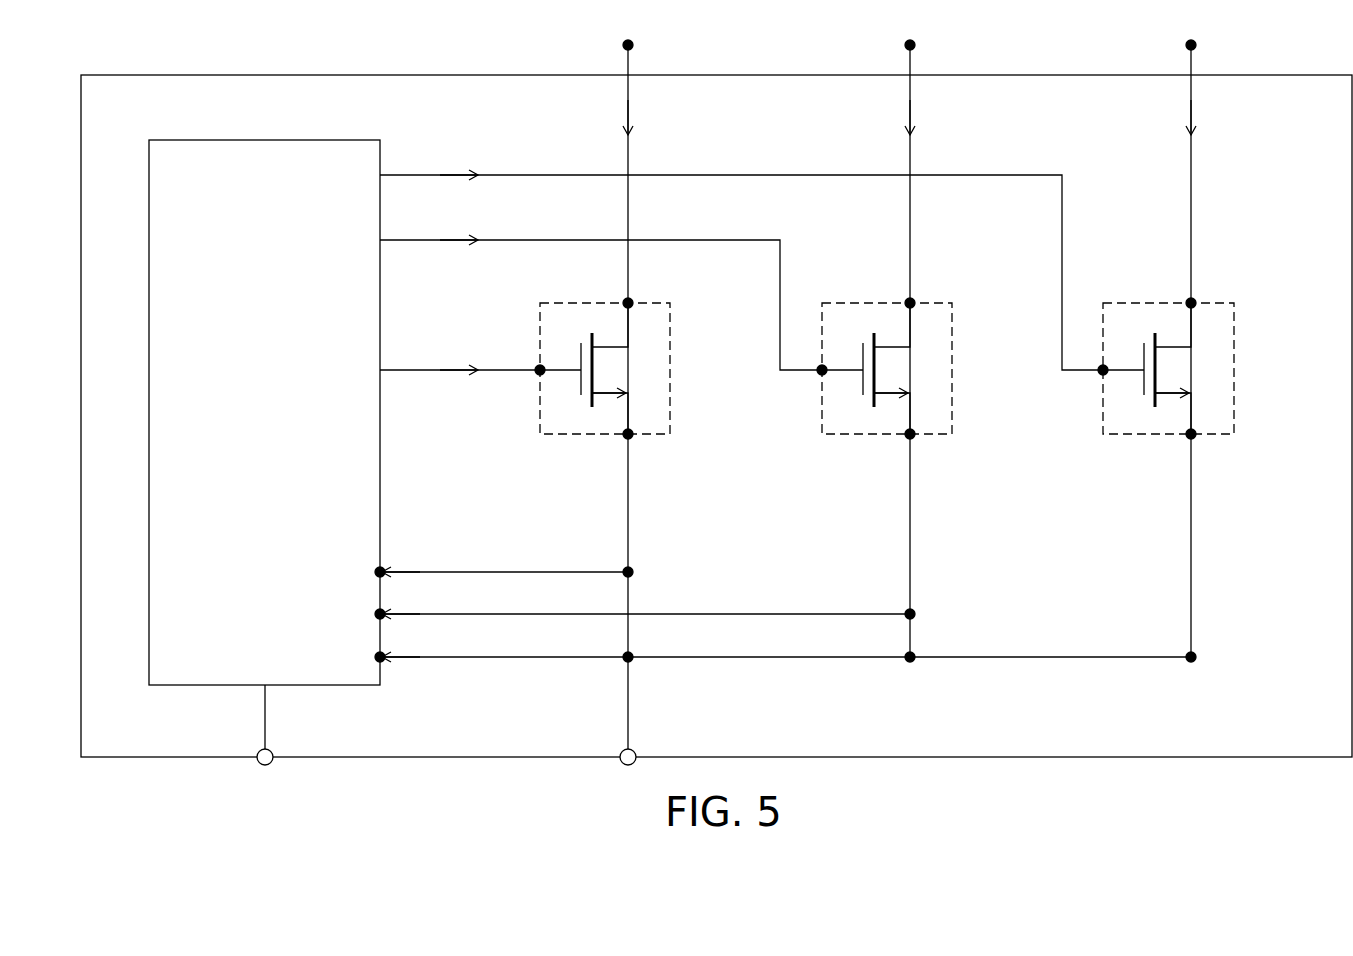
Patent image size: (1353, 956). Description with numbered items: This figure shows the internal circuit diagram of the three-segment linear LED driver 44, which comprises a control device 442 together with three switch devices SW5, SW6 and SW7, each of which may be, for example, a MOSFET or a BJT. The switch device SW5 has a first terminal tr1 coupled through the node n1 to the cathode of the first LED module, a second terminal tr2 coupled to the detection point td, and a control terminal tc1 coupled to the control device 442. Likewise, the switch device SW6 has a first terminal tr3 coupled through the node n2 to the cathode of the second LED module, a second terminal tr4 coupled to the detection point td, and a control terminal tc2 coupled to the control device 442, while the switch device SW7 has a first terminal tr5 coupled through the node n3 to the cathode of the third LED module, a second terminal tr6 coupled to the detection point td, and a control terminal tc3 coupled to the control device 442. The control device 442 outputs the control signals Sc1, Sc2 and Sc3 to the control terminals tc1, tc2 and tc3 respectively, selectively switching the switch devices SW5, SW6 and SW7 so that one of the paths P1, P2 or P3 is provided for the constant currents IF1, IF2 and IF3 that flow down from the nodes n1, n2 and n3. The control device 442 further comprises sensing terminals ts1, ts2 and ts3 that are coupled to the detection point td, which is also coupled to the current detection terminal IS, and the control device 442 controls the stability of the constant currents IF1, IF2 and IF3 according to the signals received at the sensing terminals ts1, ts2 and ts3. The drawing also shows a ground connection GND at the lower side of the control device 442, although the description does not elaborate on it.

The 3-segment linear LED driver 44 is at (1283, 75).
The control device 442 is at (158, 140).
The switch device SW5 is at (670, 340).
The switch device SW6 is at (952, 340).
The switch device SW7 is at (1234, 340).
The path P1 is at (632, 105).
The path P2 is at (914, 105).
The path P3 is at (1195, 105).
The node n1 is at (625, 375).
The node n2 is at (907, 329).
The node n3 is at (1188, 329).
The constant current IF1 is at (608, 155).
The constant current IF2 is at (890, 155).
The constant current IF3 is at (1171, 155).
The control signal Sc1 is at (408, 363).
The control signal Sc2 is at (408, 233).
The control signal Sc3 is at (408, 168).
The sensing terminal ts1 is at (383, 569).
The sensing terminal ts2 is at (383, 611).
The sensing terminal ts3 is at (383, 654).
The detection point td is at (631, 569).
The first terminal tr1 is at (631, 300).
The second terminal tr2 is at (631, 437).
The first terminal tr3 is at (913, 300).
The second terminal tr4 is at (913, 437).
The first terminal tr5 is at (1194, 300).
The second terminal tr6 is at (1194, 437).
The control terminal tc1 is at (537, 373).
The control terminal tc2 is at (819, 373).
The control terminal tc3 is at (1100, 373).
The ground GND is at (272, 743).
The current detection terminal IS is at (634, 751).